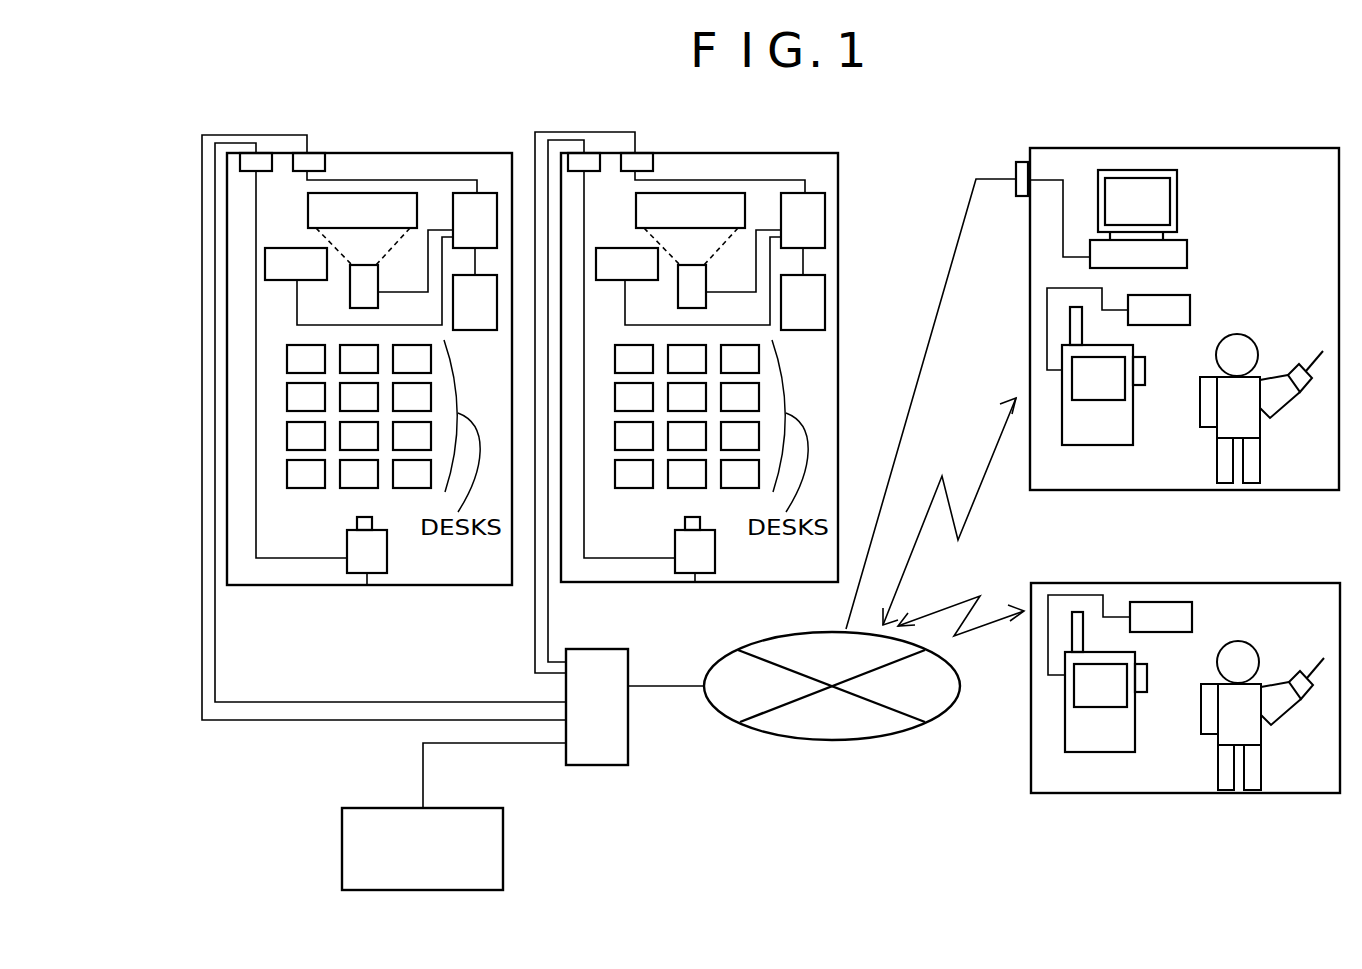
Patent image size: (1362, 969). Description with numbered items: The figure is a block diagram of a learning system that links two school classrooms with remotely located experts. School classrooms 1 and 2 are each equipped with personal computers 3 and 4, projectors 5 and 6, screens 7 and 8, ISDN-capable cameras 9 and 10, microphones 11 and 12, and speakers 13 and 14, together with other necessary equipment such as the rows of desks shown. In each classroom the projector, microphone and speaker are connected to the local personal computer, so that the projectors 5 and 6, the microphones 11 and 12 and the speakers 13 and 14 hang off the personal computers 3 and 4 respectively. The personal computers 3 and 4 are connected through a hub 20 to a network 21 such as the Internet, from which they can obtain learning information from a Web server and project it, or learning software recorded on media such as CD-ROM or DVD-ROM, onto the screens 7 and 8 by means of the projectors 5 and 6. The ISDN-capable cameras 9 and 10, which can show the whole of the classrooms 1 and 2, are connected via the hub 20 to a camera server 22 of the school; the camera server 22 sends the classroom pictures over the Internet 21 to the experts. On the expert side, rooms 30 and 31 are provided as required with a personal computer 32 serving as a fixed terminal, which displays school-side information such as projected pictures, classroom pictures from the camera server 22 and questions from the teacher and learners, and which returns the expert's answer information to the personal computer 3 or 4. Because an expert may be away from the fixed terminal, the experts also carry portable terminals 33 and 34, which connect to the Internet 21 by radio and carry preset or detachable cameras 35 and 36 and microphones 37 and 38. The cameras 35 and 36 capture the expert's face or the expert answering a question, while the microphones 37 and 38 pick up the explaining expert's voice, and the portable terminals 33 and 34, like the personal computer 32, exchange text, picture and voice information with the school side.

The school classroom 1 is at (410, 585).
The school classroom 2 is at (738, 582).
The personal computer 3 is at (481, 193).
The personal computer 4 is at (809, 193).
The projector 5 is at (378, 284).
The projector 6 is at (706, 284).
The screen 7 is at (308, 213).
The screen 8 is at (636, 210).
The ISDN-capable camera 9 is at (367, 585).
The ISDN-capable camera 10 is at (695, 582).
The microphone 11 is at (313, 280).
The microphone 12 is at (644, 280).
The speaker 13 is at (475, 330).
The speaker 14 is at (803, 330).
The hub 20 is at (597, 765).
The network 21 is at (833, 740).
The camera server 22 is at (503, 845).
The room of expert 30 is at (1030, 283).
The room of expert 31 is at (1033, 769).
The personal computer 32 is at (1187, 257).
The portable terminal 33 is at (1133, 440).
The portable terminal 34 is at (1135, 747).
The camera 35 is at (1145, 372).
The camera 36 is at (1147, 679).
The microphone 37 is at (1190, 311).
The microphone 38 is at (1192, 618).